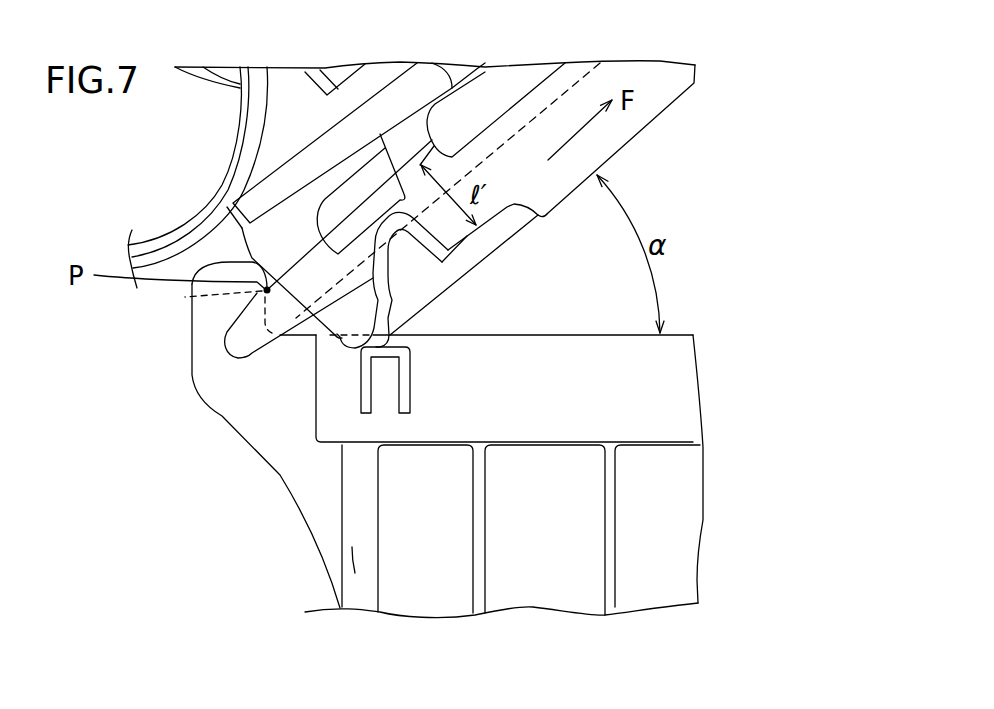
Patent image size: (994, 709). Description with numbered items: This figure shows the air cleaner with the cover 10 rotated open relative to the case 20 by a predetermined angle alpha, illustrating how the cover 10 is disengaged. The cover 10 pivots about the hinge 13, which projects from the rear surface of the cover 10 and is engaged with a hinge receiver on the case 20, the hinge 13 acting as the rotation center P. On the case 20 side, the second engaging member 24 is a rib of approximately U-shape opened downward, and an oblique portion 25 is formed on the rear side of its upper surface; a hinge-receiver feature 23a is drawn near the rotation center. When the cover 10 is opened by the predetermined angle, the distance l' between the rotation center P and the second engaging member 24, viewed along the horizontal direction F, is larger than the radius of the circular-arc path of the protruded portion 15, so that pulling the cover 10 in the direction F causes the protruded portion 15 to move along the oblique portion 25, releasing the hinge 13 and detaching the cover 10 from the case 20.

The cover 10 is at (645, 81).
The hinge 13 is at (265, 292).
The protruded portion 15 is at (355, 345).
The case 20 is at (672, 407).
The stopper portion 23a is at (191, 298).
The second engaging member 24 is at (362, 378).
The oblique portion 25 is at (378, 357).